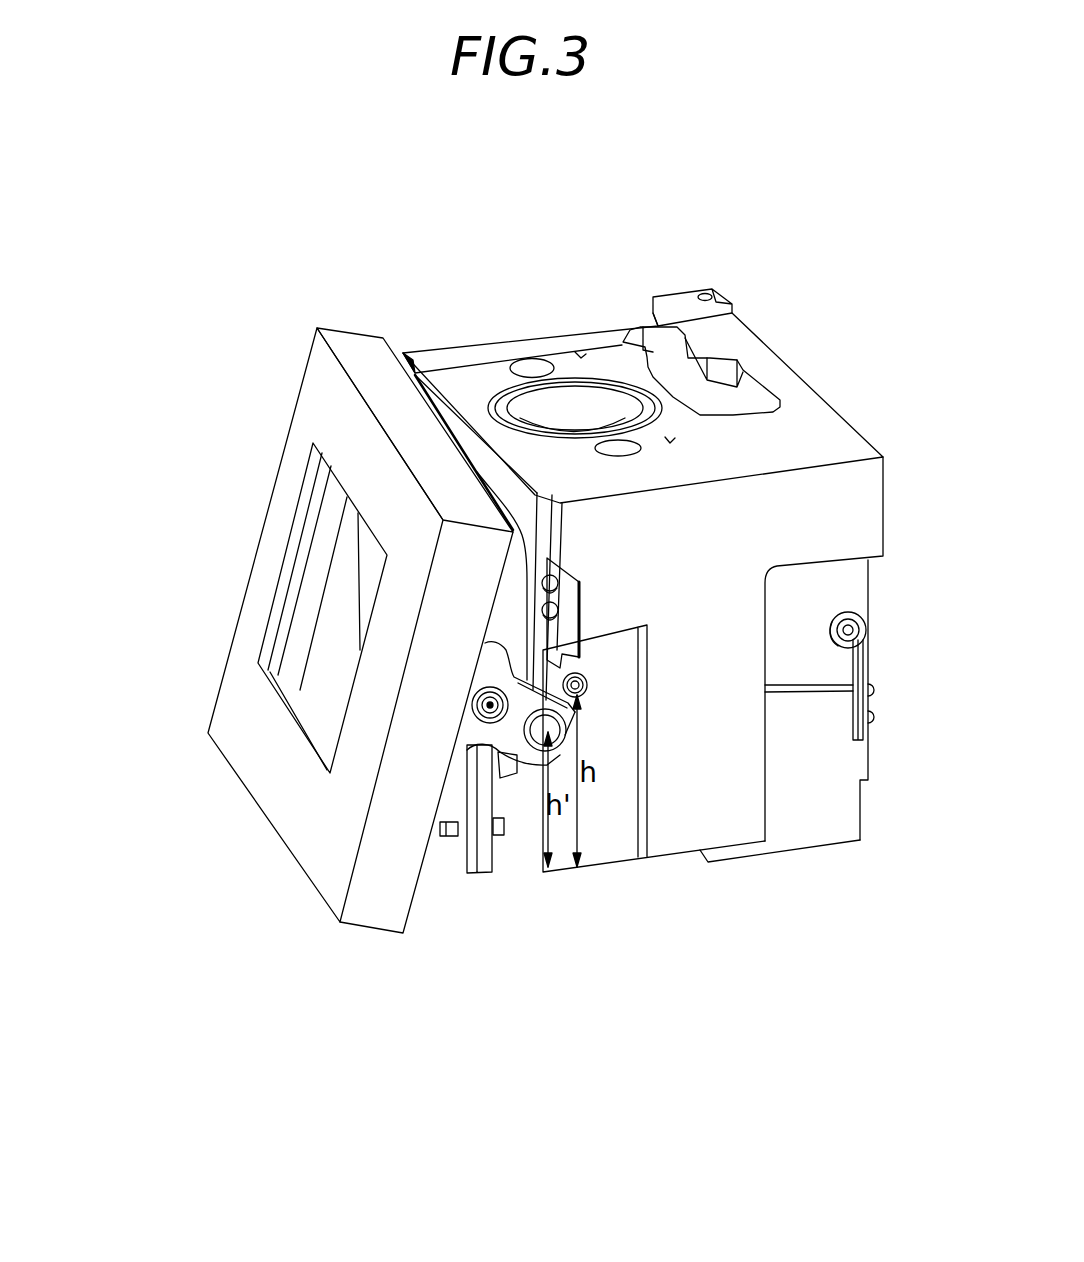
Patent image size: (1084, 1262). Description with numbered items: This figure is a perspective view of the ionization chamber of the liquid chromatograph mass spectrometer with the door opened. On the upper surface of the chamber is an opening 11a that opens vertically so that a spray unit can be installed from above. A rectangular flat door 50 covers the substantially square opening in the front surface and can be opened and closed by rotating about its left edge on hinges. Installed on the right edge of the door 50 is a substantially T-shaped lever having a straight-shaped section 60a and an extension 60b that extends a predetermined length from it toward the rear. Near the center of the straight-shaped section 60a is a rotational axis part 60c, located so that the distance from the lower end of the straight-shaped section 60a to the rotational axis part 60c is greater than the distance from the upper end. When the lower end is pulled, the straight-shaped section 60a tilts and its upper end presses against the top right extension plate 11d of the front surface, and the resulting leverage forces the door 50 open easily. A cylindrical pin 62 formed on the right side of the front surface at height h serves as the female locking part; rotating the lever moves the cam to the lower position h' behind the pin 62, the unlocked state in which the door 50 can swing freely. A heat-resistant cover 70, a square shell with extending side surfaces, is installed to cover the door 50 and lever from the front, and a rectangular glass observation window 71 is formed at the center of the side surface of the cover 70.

The opening 11a is at (582, 405).
The top right extension plate 11d is at (580, 572).
The door 50 is at (467, 878).
The straight-shaped section 60a is at (467, 750).
The extension 60b is at (518, 757).
The rotational axis part 60c is at (480, 713).
The pin 62 is at (588, 684).
The heat-resistant cover 70 is at (291, 630).
The observation window 71 is at (345, 612).